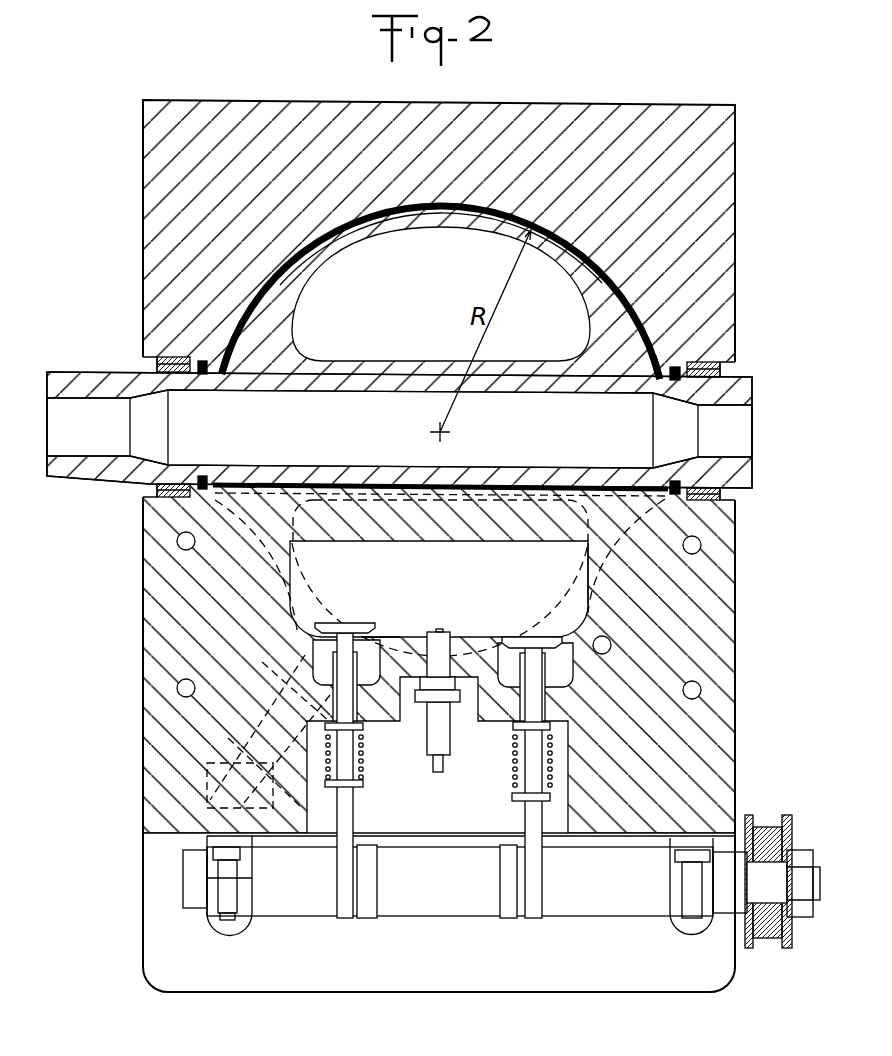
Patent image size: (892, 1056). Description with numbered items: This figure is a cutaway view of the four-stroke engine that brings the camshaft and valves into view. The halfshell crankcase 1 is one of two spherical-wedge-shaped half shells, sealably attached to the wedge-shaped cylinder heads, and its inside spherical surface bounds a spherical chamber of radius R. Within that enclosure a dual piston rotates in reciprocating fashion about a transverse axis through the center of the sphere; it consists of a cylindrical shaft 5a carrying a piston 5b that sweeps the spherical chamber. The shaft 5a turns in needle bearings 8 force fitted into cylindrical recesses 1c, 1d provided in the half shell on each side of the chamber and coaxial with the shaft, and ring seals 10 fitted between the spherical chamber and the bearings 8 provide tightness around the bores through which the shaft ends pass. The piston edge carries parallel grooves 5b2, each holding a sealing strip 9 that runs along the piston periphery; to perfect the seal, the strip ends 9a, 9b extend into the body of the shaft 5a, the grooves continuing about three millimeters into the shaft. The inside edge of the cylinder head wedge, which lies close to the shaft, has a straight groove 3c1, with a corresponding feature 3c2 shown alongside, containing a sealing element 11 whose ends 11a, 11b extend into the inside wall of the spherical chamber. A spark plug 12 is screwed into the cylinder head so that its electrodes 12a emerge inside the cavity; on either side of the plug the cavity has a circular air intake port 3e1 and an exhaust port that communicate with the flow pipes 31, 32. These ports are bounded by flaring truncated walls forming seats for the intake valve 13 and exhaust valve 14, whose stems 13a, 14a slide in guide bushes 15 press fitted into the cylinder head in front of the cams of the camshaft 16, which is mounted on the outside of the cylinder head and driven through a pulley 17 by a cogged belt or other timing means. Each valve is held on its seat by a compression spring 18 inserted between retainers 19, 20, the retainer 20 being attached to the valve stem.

The halfshell crankcase 1 is at (725, 163).
The cylindrical recess 1c is at (152, 362).
The cylindrical recess 1d is at (727, 362).
The straight groove 3c1 is at (492, 495).
The cavity side portion 3c2 is at (588, 583).
The circular air intake port 3e1 is at (376, 630).
The flow pipe 31 is at (318, 653).
The flow pipe 32 is at (568, 660).
The cylindrical shaft 5a is at (730, 395).
The piston 5b is at (378, 369).
The groove 5b2 is at (447, 216).
The needle bearing 8 is at (178, 357).
The sealing strip 9 is at (482, 205).
The end of sealing strip 9a is at (226, 381).
The end of sealing strip 9b is at (656, 383).
The ring seal 10 is at (204, 360).
The sealing element 11 is at (472, 484).
The end of sealing element 11a is at (217, 499).
The end of sealing element 11b is at (664, 500).
The spark plug 12 is at (440, 757).
The electrodes 12a is at (438, 631).
The intake valve 13 is at (349, 622).
The stem of intake valve 13a is at (340, 706).
The exhaust valve 14 is at (519, 636).
The stem of exhaust valve 14a is at (543, 711).
The guide bush 15 is at (333, 690).
The camshaft 16 is at (600, 898).
The pulley 17 is at (764, 828).
The compression spring 18 is at (364, 770).
The retainer 19 is at (364, 730).
The retainer 20 is at (364, 788).